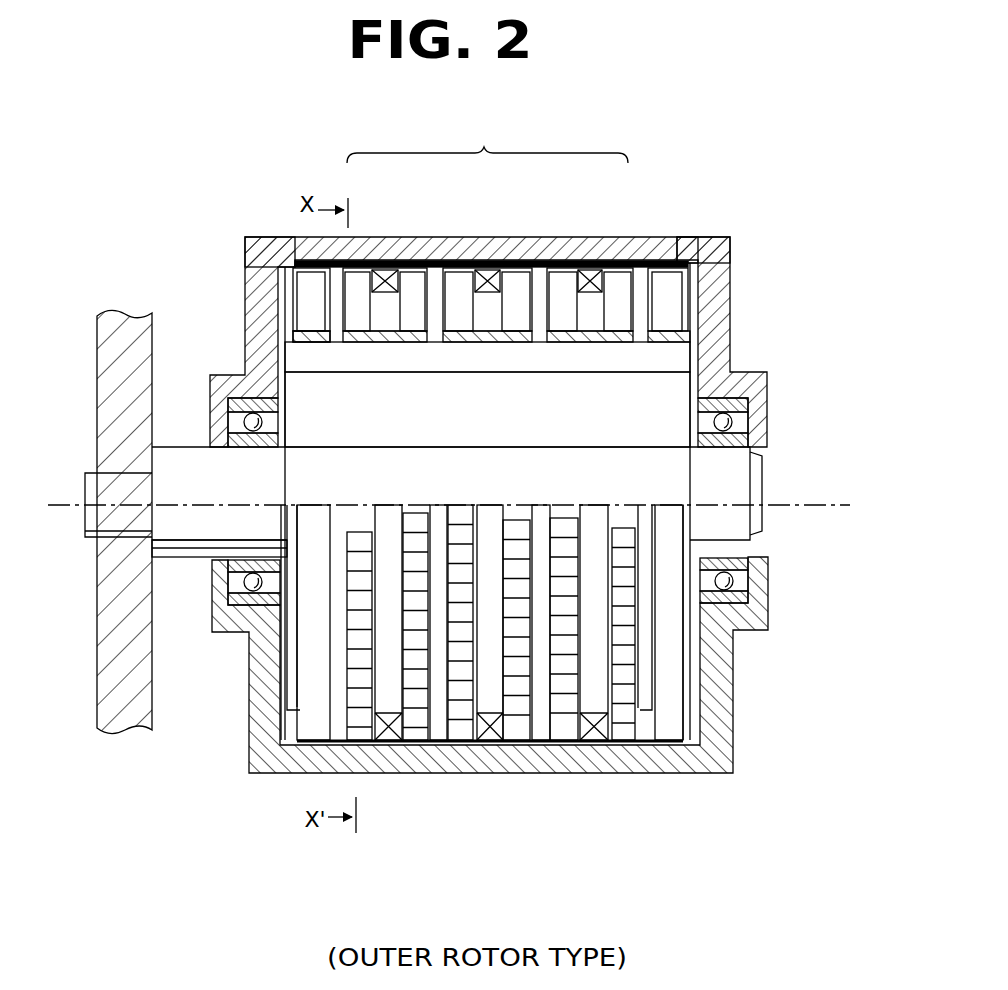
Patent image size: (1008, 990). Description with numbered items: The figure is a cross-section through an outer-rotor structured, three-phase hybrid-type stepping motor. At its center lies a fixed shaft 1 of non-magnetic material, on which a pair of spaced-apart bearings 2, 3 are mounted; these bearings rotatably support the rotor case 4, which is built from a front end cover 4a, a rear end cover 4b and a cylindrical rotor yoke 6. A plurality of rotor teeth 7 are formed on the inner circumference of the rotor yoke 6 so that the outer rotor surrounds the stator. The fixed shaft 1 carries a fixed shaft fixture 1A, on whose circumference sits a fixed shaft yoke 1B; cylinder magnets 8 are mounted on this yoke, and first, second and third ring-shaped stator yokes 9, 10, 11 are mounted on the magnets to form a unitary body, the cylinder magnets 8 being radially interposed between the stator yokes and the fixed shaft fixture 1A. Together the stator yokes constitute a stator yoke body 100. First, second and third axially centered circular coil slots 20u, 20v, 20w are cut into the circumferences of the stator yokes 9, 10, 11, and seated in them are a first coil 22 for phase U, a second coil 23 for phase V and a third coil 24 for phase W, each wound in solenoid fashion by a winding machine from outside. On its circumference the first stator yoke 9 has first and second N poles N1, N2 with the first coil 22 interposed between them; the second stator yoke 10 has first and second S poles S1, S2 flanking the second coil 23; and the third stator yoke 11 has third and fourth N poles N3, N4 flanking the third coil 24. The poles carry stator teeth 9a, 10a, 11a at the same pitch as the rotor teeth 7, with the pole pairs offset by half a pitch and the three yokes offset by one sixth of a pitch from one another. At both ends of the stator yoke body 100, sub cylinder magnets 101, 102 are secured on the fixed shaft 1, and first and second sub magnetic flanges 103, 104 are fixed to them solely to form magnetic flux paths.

The fixed shaft 1 is at (177, 540).
The fixed shaft fixture 1A is at (677, 390).
The fixed shaft yoke 1B is at (685, 356).
The bearing 2 is at (228, 406).
The bearing 3 is at (722, 415).
The rotor case 4 is at (664, 226).
The front end cover 4a is at (245, 252).
The rear end cover 4b is at (733, 242).
The rotor yoke 6 is at (545, 261).
The rotor teeth 7 is at (491, 300).
The cylinder magnets 8 is at (343, 338).
The first stator yoke 9 is at (307, 745).
The stator teeth 9a is at (297, 655).
The second stator yoke 10 is at (443, 745).
The stator teeth 10a is at (478, 745).
The third stator yoke 11 is at (543, 745).
The stator teeth 11a is at (627, 713).
The first coil slot 20u is at (385, 314).
The second coil slot 20v is at (487, 314).
The third coil slot 20w is at (596, 314).
The first coil 22 is at (384, 270).
The second coil 23 is at (486, 270).
The third coil 24 is at (590, 270).
The stator yoke body 100 is at (491, 278).
The sub cylinder magnet 101 is at (290, 336).
The sub cylinder magnet 102 is at (683, 305).
The first sub magnetic flange 103 is at (293, 303).
The second sub magnetic flange 104 is at (713, 252).
The first N pole N1 is at (365, 745).
The second N pole N2 is at (405, 745).
The third N pole N3 is at (577, 745).
The fourth N pole N4 is at (628, 745).
The first S pole S1 is at (472, 745).
The second S pole S2 is at (527, 745).